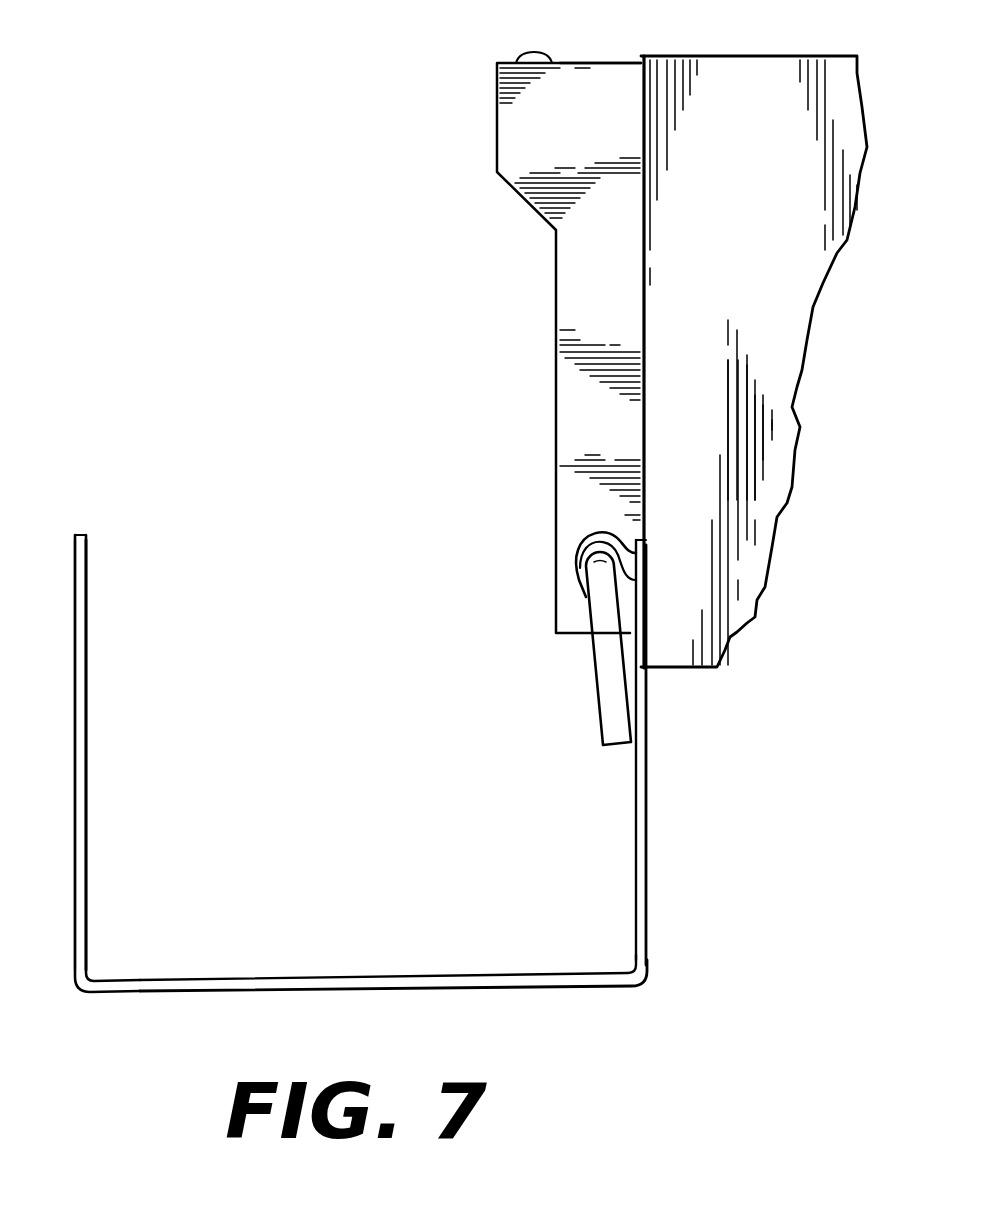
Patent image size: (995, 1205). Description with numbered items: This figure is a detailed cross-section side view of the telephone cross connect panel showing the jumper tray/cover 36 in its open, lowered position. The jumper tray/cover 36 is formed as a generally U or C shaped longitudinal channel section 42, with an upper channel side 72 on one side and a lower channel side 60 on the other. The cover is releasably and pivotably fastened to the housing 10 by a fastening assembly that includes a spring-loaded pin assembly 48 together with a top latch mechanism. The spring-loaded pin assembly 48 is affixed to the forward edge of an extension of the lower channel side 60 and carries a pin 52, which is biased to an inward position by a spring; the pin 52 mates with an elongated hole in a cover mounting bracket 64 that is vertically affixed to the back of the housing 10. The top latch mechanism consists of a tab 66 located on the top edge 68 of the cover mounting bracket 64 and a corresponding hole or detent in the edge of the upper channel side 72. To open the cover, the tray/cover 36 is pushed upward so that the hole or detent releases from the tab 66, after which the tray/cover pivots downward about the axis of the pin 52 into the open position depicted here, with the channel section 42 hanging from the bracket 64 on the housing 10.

The housing 10 is at (765, 305).
The jumper tray/cover 36 is at (92, 995).
The channel section 42 is at (415, 990).
The spring-loaded pin assembly 48 is at (541, 582).
The pin 52 is at (612, 665).
The lower channel side 60 is at (648, 827).
The cover mounting bracket 64 is at (598, 288).
The tab 66 is at (527, 58).
The top edge 68 is at (603, 63).
The upper channel side 72 is at (89, 822).